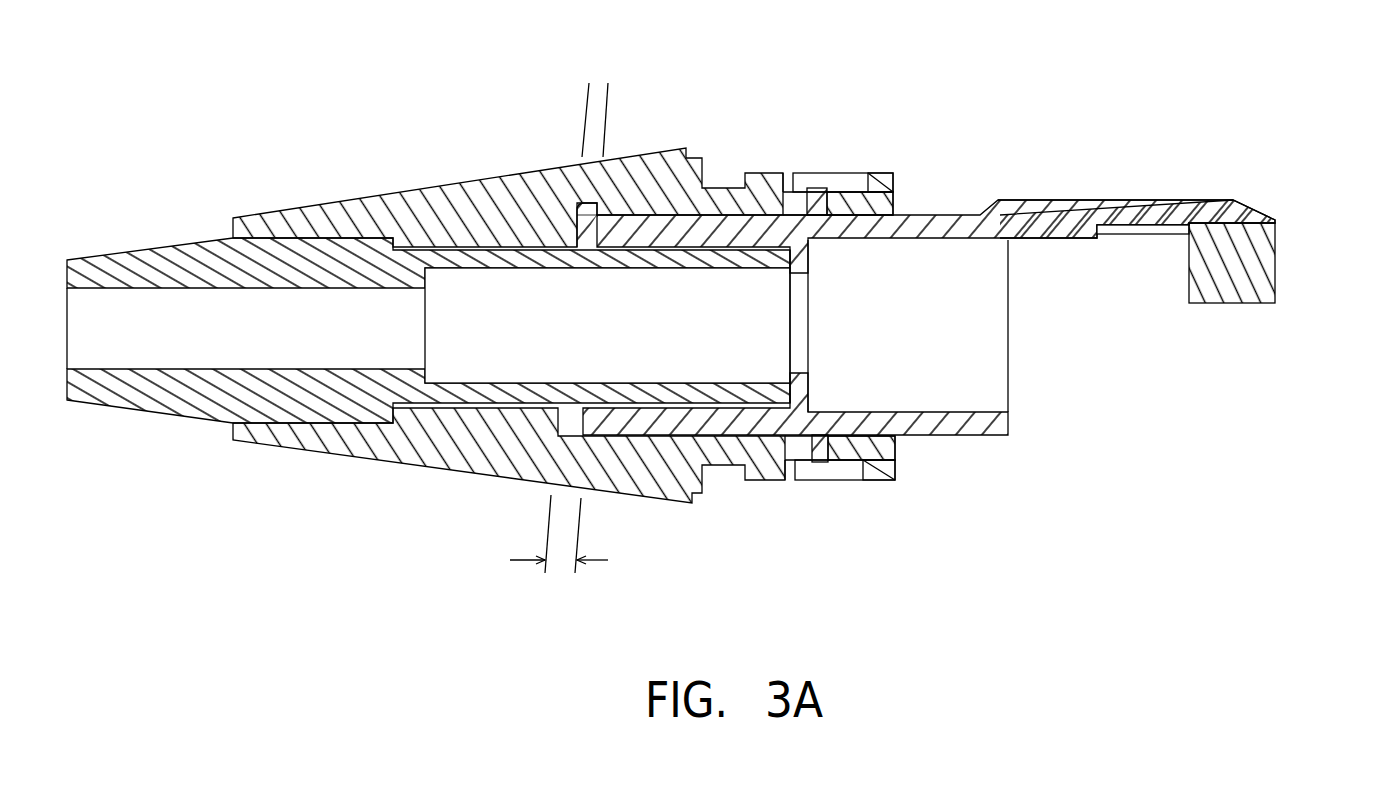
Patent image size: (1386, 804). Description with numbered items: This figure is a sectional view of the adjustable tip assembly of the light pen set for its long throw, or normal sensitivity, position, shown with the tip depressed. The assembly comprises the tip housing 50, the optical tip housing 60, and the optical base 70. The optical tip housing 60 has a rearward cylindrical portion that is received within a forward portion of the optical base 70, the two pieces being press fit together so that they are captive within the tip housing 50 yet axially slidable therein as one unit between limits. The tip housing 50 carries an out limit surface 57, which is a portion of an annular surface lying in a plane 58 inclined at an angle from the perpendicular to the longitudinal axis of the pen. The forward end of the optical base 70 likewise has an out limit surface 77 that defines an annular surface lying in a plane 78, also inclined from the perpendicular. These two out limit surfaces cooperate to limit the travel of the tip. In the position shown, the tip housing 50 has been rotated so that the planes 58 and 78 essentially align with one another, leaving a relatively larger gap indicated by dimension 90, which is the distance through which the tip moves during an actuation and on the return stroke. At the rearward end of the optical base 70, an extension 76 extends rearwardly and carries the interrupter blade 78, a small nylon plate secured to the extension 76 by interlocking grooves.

The tip housing 50 is at (349, 190).
The out limit surface 57 is at (585, 212).
The plane 58 is at (583, 108).
The optical tip housing 60 is at (177, 236).
The optical base 70 is at (946, 198).
The extension 76 is at (1117, 200).
The out limit surface 77 is at (594, 228).
The interrupter blade 78 is at (607, 102).
The dimension 90 is at (602, 560).